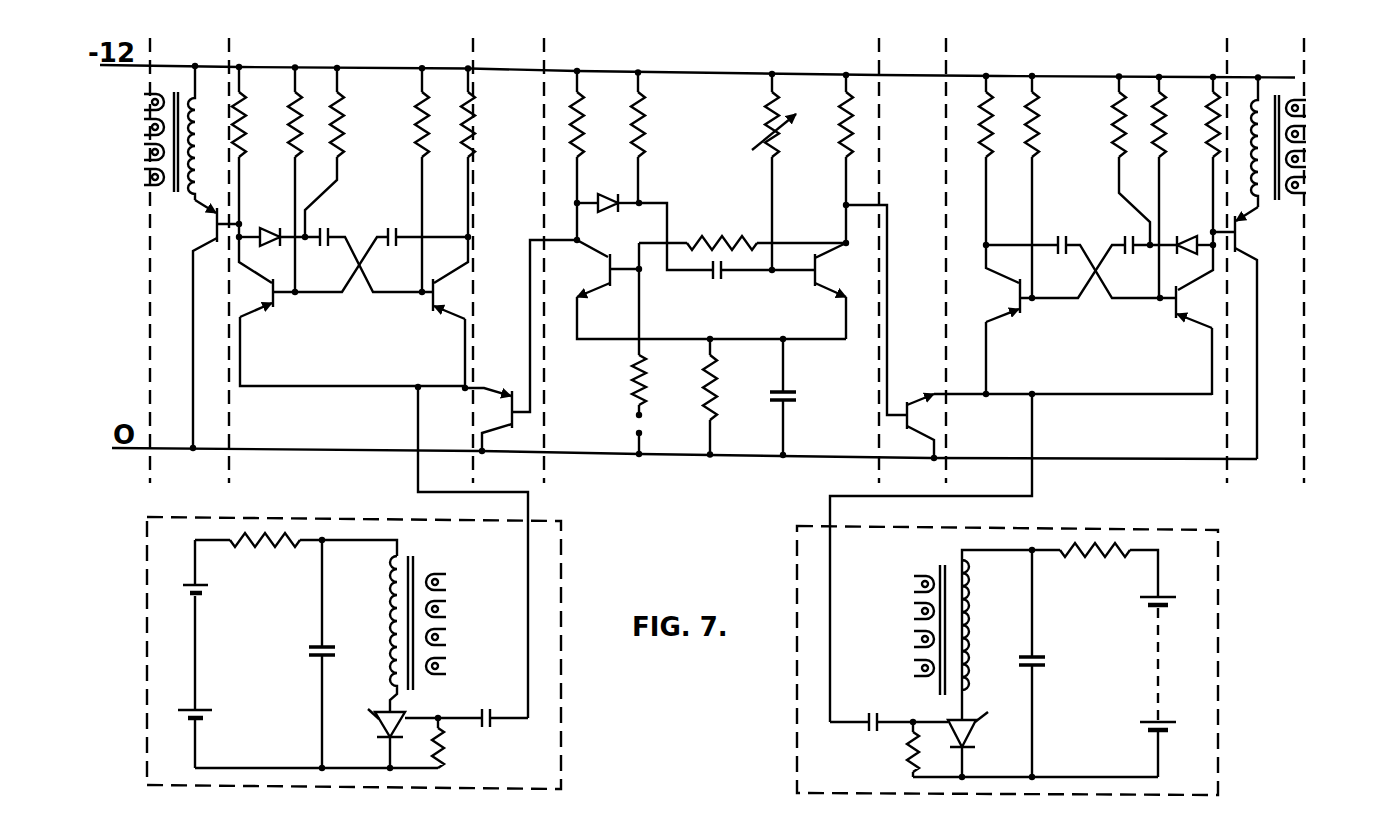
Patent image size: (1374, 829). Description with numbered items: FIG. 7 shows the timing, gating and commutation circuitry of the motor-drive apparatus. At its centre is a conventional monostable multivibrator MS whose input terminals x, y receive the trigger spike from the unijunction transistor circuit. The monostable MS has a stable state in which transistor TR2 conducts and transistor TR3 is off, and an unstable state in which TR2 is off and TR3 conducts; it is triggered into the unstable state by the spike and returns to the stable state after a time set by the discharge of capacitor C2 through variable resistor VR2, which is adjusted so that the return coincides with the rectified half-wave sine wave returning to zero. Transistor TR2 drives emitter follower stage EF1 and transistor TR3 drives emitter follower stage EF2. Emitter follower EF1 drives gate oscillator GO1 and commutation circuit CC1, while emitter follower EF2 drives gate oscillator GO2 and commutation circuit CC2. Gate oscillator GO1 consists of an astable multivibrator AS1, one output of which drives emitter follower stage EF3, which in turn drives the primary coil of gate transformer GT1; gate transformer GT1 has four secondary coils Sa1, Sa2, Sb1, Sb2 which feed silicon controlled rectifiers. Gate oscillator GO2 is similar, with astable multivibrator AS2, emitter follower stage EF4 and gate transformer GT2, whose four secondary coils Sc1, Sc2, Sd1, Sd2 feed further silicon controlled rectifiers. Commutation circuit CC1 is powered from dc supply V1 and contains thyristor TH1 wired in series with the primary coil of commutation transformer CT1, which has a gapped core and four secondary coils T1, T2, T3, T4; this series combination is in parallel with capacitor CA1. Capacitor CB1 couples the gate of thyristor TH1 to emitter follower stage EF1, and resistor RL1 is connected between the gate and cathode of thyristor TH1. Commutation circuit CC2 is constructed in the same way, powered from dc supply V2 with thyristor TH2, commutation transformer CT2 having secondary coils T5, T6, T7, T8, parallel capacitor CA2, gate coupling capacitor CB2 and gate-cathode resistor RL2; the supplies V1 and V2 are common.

The gate oscillator GO2 is at (473, 49).
The emitter follower stage EF2 is at (544, 50).
The monostable multivibrator MS is at (879, 53).
The emitter follower stage EF1 is at (946, 53).
The gate oscillator GO1 is at (1304, 55).
The emitter follower stage EF4 is at (229, 472).
The astable multivibrator AS2 is at (473, 475).
The astable multivibrator AS1 is at (946, 478).
The emitter follower stage EF3 is at (1304, 480).
The secondary coil Sc1 is at (124, 101).
The secondary coil Sc2 is at (124, 126).
The secondary coil Sd1 is at (124, 151).
The secondary coil Sd2 is at (124, 176).
The gate transformer GT2 is at (196, 323).
The variable resistor VR2 is at (752, 172).
The capacitor C2 is at (717, 285).
The terminal x is at (654, 415).
The terminal y is at (654, 434).
The transistor TR3 is at (608, 290).
The transistor TR2 is at (817, 285).
The gate transformer GT1 is at (1253, 333).
The secondary coil Sa1 is at (1324, 107).
The secondary coil Sa2 is at (1324, 133).
The secondary coil Sb1 is at (1324, 158).
The secondary coil Sb2 is at (1324, 184).
The commutation circuit CC2 is at (561, 737).
The dc supply V2 is at (197, 595).
The capacitor CA2 is at (313, 655).
The commutation transformer CT2 is at (420, 619).
The secondary coil T5 is at (455, 581).
The secondary coil T6 is at (455, 608).
The secondary coil T7 is at (455, 636).
The secondary coil T8 is at (455, 665).
The thyristor TH2 is at (365, 728).
The capacitor CB2 is at (493, 719).
The resistor RL2 is at (446, 740).
The commutation circuit CC1 is at (1218, 762).
The capacitor CB1 is at (866, 725).
The resistor RL1 is at (906, 742).
The thyristor TH1 is at (985, 733).
The commutation transformer CT1 is at (984, 612).
The secondary coil T1 is at (907, 583).
The secondary coil T2 is at (907, 610).
The secondary coil T3 is at (907, 638).
The secondary coil T4 is at (907, 667).
The dc supply V1 is at (1160, 606).
The capacitor CA1 is at (1044, 664).